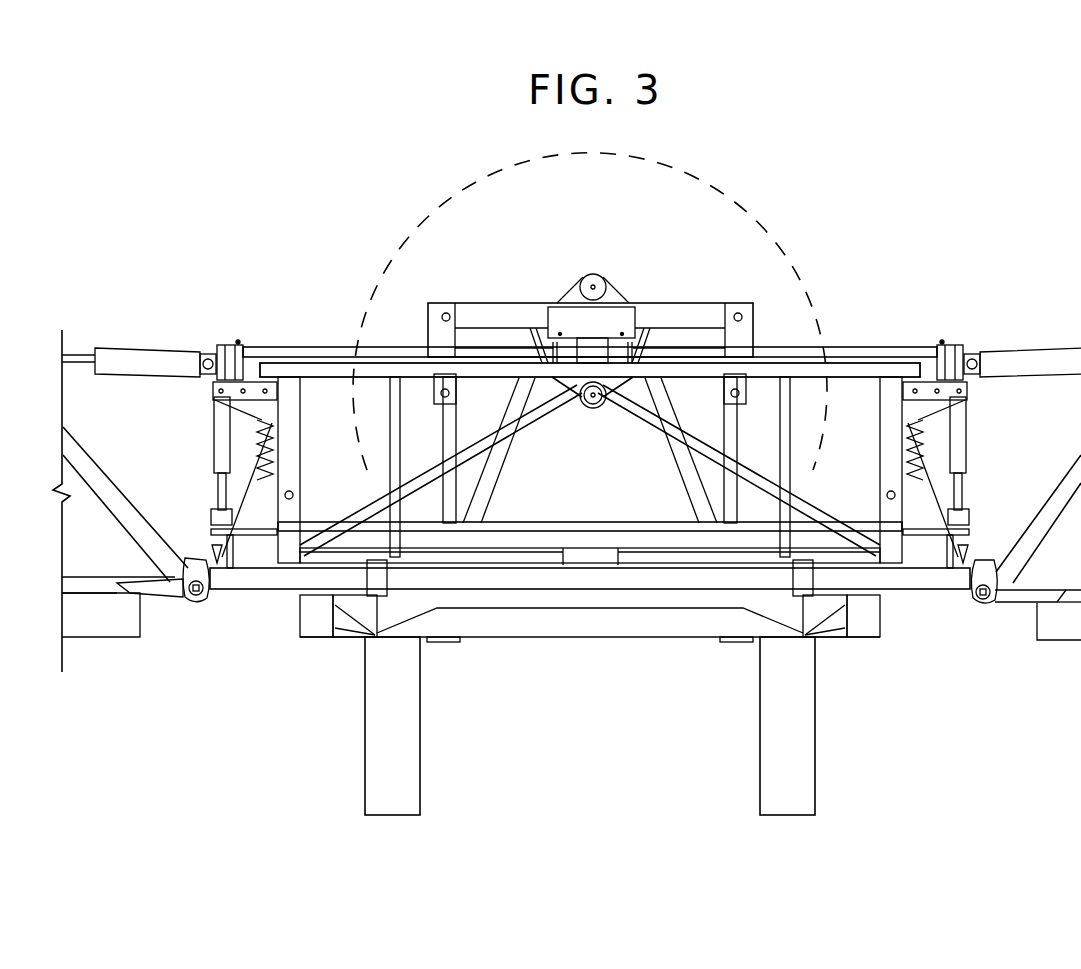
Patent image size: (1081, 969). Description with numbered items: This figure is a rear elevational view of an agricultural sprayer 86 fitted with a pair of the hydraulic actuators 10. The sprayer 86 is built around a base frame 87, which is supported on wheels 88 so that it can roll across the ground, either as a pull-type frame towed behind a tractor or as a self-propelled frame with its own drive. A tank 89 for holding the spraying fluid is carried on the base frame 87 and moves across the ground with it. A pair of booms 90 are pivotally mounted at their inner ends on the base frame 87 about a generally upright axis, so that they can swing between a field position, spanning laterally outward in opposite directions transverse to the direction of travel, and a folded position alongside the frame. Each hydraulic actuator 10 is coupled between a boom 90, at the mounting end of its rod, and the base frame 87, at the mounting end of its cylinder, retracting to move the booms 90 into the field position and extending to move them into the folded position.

The hydraulic actuator 10 is at (290, 575).
The agricultural sprayer 86 is at (842, 250).
The base frame 87 is at (604, 625).
The wheels 88 is at (413, 735).
The tank 89 is at (686, 170).
The booms 90 is at (104, 586).